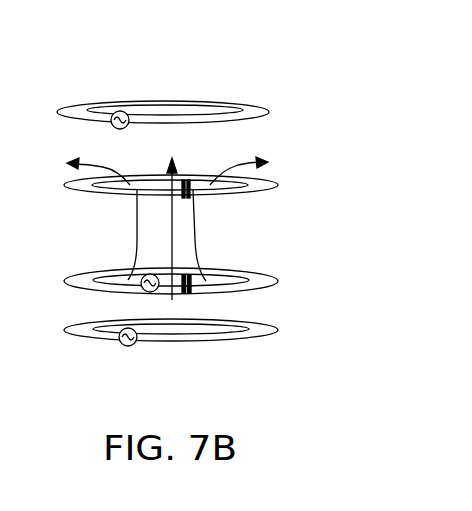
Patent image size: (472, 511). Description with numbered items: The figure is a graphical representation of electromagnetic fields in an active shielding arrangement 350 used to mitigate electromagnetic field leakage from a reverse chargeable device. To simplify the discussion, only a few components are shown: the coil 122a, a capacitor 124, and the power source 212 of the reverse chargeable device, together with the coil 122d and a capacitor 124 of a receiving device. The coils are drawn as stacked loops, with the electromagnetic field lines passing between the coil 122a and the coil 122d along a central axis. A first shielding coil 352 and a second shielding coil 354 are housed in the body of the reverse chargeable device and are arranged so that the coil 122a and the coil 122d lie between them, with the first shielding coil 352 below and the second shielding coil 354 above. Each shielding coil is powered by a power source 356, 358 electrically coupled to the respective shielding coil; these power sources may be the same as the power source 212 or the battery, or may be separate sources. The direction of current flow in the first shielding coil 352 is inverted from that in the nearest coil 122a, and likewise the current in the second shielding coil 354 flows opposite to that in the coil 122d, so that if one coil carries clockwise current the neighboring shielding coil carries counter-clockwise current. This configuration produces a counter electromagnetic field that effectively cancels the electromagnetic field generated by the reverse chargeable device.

The wireless power transfer system 350 is at (290, 82).
The second shielding coil 354 is at (249, 109).
The power source 358 is at (120, 111).
The coil 122d is at (86, 192).
The capacitor 124 is at (191, 199).
The coil 122a is at (66, 279).
The power source 212 is at (146, 291).
The first shielding coil 352 is at (227, 340).
The power source 356 is at (128, 346).